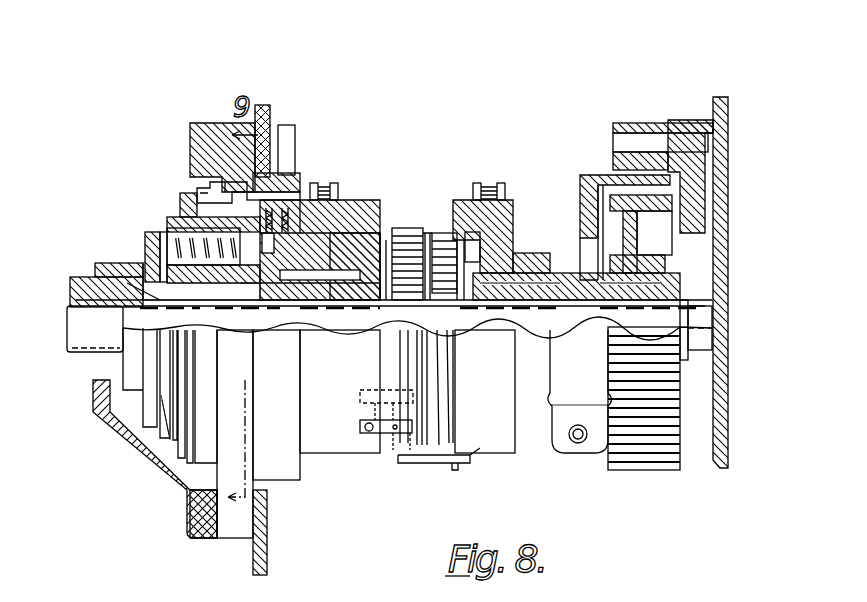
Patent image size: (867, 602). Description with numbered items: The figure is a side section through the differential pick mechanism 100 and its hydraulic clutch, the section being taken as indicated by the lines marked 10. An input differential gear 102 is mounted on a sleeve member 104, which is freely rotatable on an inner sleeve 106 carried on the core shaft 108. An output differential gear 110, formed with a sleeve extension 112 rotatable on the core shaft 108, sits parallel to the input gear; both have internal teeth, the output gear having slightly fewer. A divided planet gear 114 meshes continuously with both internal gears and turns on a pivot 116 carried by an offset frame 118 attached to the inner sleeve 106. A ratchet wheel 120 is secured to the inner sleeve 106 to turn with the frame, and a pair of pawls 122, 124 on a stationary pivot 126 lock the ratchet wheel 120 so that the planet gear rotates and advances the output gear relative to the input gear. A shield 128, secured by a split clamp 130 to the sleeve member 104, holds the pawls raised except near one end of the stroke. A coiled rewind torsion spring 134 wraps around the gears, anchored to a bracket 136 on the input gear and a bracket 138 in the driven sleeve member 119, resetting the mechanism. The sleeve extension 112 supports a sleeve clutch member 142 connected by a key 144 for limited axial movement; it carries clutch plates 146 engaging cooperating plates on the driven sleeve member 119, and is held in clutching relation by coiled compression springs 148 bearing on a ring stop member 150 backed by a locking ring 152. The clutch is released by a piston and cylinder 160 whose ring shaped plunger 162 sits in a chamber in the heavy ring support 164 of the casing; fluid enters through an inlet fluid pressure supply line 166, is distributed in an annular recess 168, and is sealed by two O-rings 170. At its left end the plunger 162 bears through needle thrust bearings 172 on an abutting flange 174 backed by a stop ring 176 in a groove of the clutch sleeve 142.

The section line 10- 10 is at (209, 178).
The differential pick mechanism 100 is at (328, 466).
The input differential gear 102 is at (450, 205).
The sleeve member 104 is at (545, 252).
The inner sleeve 106 is at (582, 303).
The core shaft 108 is at (700, 333).
The output differential gear 110 is at (404, 228).
The sleeve extension 112 is at (250, 303).
The divided planet gear 114 is at (418, 292).
The pivot 116 is at (522, 215).
The offset frame 118 is at (388, 306).
The driven sleeve member 119 is at (378, 196).
The ratchet wheel 120 is at (660, 196).
The pawl 122 is at (660, 118).
The pawl 124 is at (618, 120).
The stationary pivot 126 is at (707, 145).
The shield 128 is at (600, 180).
The split clamp 130 is at (582, 455).
The coiled rewind torsion spring 134 is at (437, 455).
The bracket 136 is at (470, 463).
The bracket 138 is at (374, 450).
The sleeve clutch member 142 is at (292, 302).
The key 144 is at (205, 304).
The clutch plates 146 is at (330, 210).
The coiled compression springs 148 is at (118, 347).
The ring stop member 150 is at (125, 266).
The locking ring 152 is at (75, 305).
The piston and cylinder 160 is at (206, 447).
The ring shaped plunger 162 is at (190, 210).
The heavy ring support 164 is at (218, 125).
The inlet fluid pressure supply line 166 is at (290, 150).
The annular recess 168 is at (265, 140).
The O-rings 170 is at (233, 187).
The needle thrust bearings 172 is at (205, 205).
The abutting flange 174 is at (185, 206).
The stop ring 176 is at (167, 223).